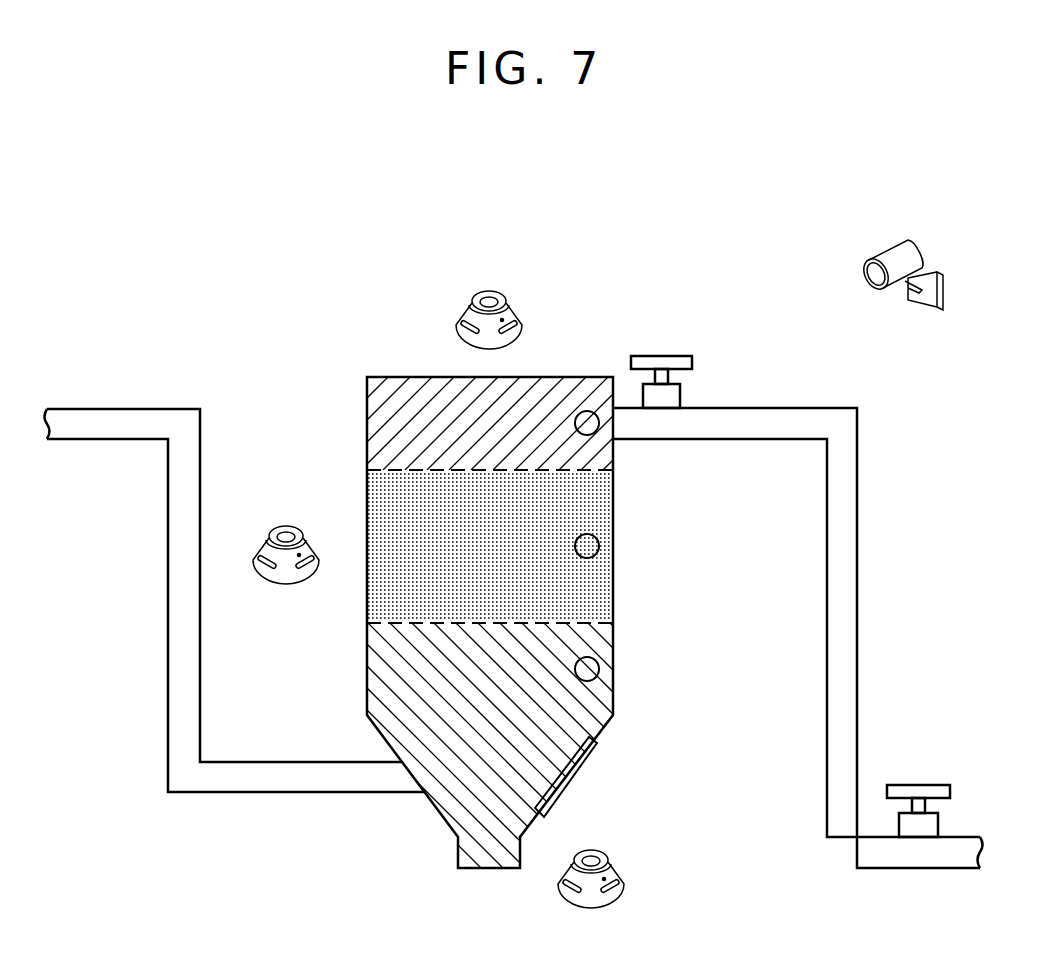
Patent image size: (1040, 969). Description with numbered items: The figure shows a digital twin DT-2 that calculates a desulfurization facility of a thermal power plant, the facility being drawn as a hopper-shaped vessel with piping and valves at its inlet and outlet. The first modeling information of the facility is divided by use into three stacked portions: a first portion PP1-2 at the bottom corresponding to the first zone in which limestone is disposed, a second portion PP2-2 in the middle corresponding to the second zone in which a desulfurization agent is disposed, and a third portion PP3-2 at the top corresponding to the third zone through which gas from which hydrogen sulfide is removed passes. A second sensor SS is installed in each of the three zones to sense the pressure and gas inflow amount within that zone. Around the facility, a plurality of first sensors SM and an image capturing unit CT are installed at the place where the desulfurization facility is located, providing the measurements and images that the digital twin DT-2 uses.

The digital twin DT-2 is at (807, 210).
The third portion PP3-2 is at (594, 446).
The second portion PP2-2 is at (594, 495).
The first portion PP1-2 is at (594, 694).
The second sensor SS is at (588, 410).
The first sensor SM is at (489, 290).
The image capturing unit CT is at (944, 290).